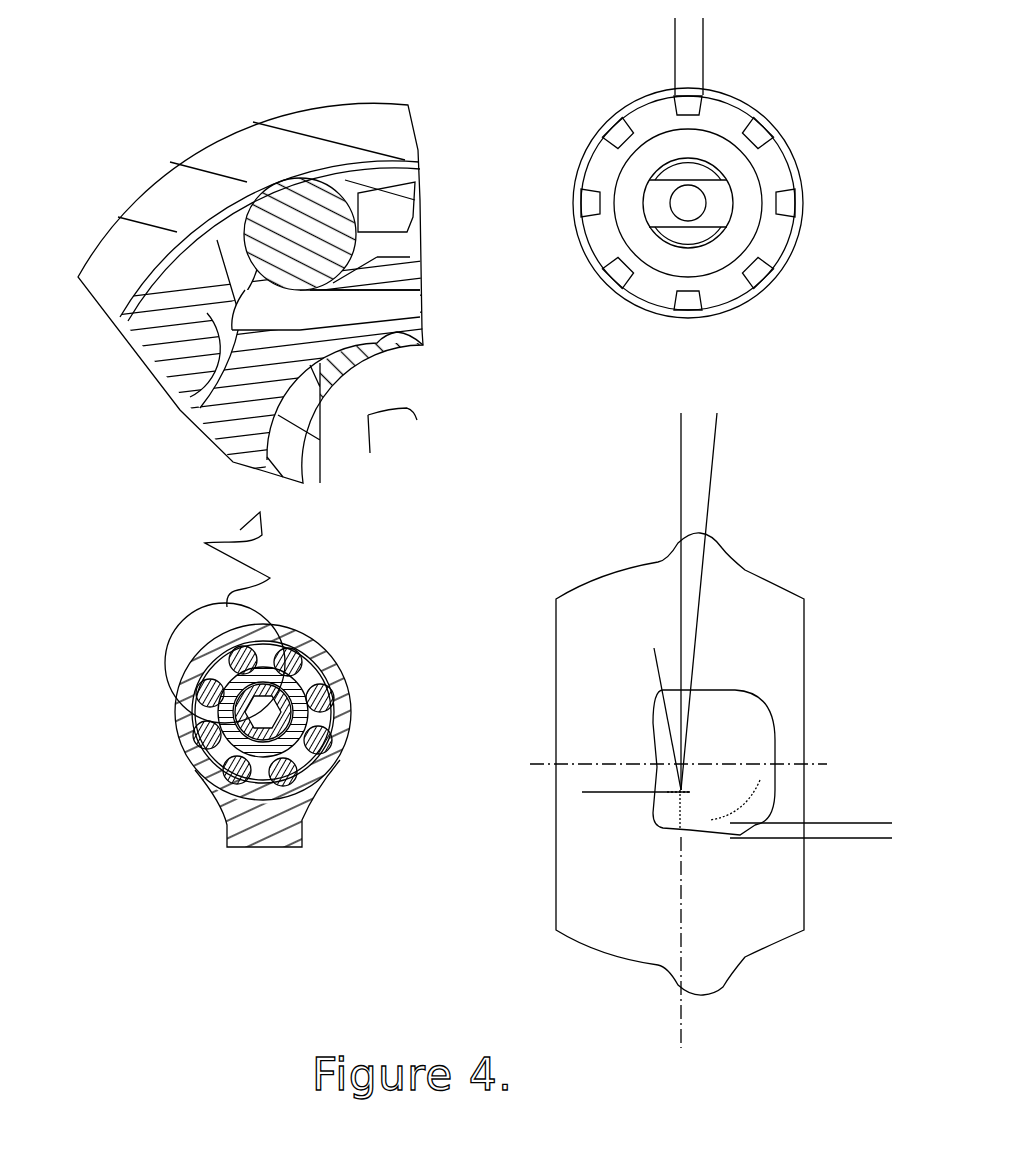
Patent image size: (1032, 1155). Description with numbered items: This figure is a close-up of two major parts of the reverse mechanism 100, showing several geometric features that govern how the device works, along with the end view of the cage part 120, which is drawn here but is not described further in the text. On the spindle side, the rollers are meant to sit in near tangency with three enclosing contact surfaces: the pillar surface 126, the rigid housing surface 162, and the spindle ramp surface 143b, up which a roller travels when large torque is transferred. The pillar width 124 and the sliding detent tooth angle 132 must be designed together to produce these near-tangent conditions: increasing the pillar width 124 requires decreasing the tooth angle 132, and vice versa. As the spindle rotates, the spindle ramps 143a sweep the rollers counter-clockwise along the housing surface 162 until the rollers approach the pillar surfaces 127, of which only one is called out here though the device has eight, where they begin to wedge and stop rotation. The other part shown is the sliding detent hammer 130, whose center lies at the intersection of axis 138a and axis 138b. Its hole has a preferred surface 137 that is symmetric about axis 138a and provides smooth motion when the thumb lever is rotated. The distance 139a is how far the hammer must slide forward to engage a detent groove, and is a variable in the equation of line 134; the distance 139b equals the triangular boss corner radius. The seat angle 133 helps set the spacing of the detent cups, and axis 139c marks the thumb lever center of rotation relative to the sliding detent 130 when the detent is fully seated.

The reverse mechanism 100 is at (367, 656).
The bearing cage 120 is at (755, 304).
The pillar width 124 is at (615, 33).
The pillar surface 126 is at (355, 212).
The pillar surface 127 is at (215, 267).
The sliding detent hammer 130 is at (785, 583).
The sliding detent tooth angle 132 is at (622, 432).
The seat angle 133 is at (737, 672).
The line 134 is at (699, 827).
The surface 137 is at (757, 703).
The axis 138a is at (550, 765).
The axis 138b is at (681, 1025).
The distance 139a is at (595, 705).
The distance 139b is at (878, 765).
The axis 139c is at (675, 797).
The spindle ramp 143a is at (357, 283).
The spindle ramp surface 143b is at (318, 297).
The rigid housing surface 162 is at (248, 188).